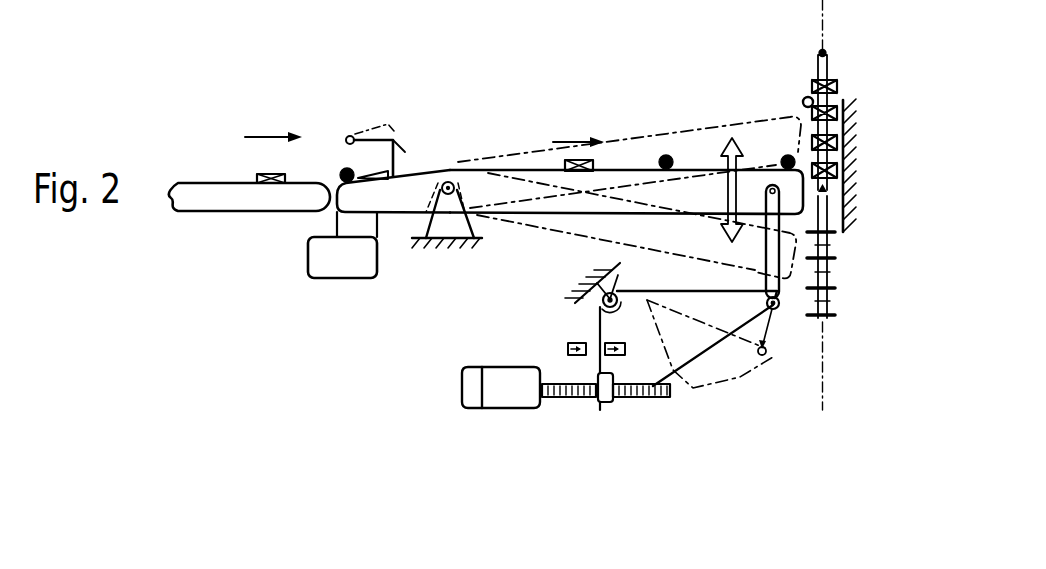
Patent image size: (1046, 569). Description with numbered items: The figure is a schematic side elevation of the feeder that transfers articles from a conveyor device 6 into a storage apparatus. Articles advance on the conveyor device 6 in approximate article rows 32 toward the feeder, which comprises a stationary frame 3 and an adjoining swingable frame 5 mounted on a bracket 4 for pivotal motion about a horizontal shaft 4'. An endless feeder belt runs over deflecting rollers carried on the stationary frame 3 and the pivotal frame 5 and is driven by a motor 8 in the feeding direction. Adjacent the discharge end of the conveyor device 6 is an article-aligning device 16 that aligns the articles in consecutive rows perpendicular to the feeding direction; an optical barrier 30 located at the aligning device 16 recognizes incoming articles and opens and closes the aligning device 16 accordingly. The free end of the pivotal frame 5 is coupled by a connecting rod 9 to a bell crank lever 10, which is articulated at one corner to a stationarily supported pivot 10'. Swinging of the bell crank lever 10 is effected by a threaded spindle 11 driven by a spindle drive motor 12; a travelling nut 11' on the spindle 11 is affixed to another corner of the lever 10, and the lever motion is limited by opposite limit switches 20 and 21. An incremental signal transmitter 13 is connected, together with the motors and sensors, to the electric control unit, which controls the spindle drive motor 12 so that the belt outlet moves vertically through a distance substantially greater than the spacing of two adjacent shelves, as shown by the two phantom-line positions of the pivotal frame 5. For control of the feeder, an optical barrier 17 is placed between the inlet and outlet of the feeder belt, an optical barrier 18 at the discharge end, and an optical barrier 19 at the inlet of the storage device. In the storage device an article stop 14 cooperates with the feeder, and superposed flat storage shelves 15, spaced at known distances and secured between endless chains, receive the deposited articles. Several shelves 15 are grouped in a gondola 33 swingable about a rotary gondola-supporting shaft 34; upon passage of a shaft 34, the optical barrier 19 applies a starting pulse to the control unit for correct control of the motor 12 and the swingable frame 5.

The stationary frame 3 is at (383, 200).
The bracket 4 is at (447, 235).
The horizontal shaft 4' is at (460, 158).
The swingable frame 5 is at (547, 203).
The conveyor device 6 is at (222, 196).
The motor 8 is at (345, 265).
The connecting rod 9 is at (758, 226).
The bell crank lever 10 is at (697, 355).
The stationarily supported pivot 10' is at (616, 283).
The threaded spindle 11 is at (610, 423).
The travelling nut 11' is at (598, 384).
The spindle drive motor 12 is at (510, 398).
The incremental signal transmitter 13 is at (470, 393).
The article stop 14 is at (846, 162).
The storage shelves 15 is at (834, 313).
The article-aligning device 16 is at (395, 138).
The optical barrier 17 is at (663, 154).
The optical barrier 18 is at (784, 153).
The optical barrier 19 is at (803, 98).
The limit switch 20 is at (602, 342).
The limit switch 21 is at (566, 348).
The optical barrier 30 is at (343, 167).
The article rows 32 is at (257, 174).
The gondola 33 is at (828, 74).
The gondola-supporting shaft 34 is at (826, 52).